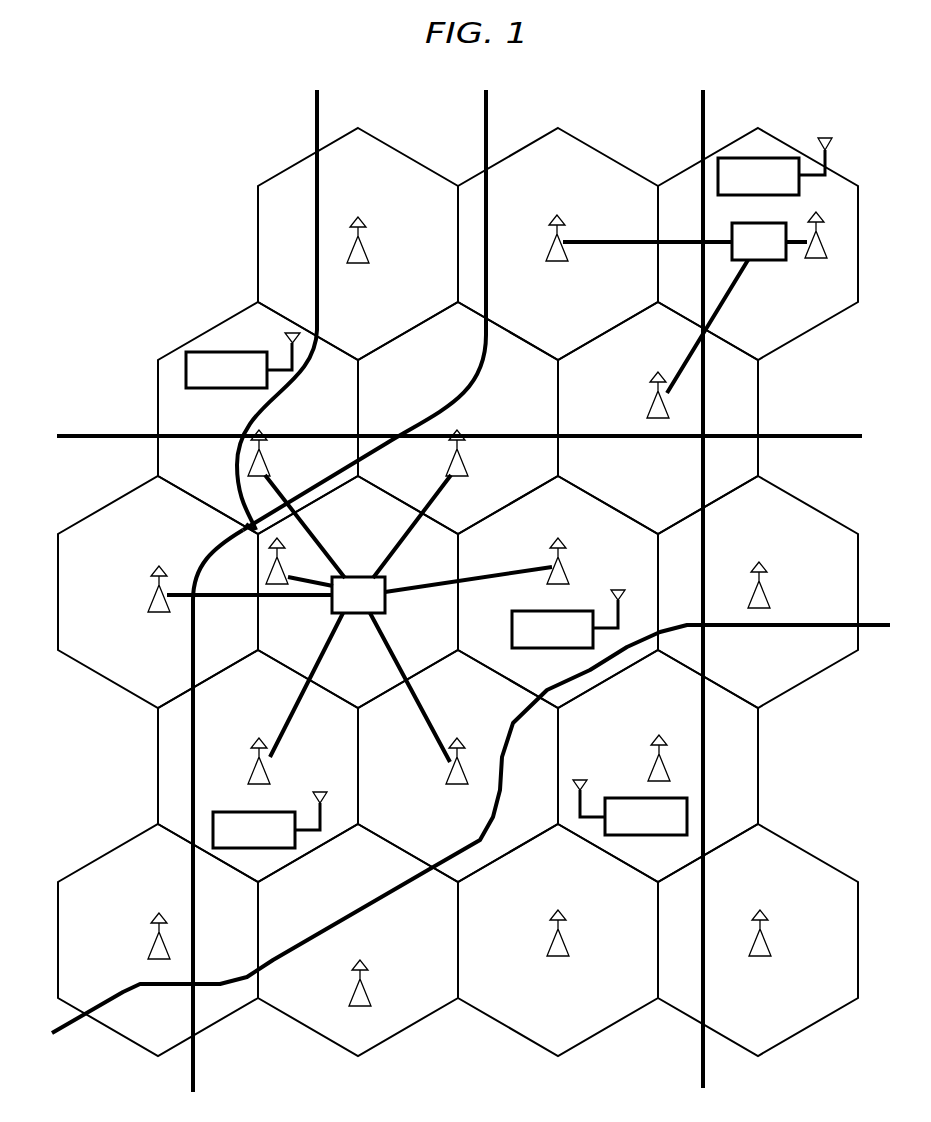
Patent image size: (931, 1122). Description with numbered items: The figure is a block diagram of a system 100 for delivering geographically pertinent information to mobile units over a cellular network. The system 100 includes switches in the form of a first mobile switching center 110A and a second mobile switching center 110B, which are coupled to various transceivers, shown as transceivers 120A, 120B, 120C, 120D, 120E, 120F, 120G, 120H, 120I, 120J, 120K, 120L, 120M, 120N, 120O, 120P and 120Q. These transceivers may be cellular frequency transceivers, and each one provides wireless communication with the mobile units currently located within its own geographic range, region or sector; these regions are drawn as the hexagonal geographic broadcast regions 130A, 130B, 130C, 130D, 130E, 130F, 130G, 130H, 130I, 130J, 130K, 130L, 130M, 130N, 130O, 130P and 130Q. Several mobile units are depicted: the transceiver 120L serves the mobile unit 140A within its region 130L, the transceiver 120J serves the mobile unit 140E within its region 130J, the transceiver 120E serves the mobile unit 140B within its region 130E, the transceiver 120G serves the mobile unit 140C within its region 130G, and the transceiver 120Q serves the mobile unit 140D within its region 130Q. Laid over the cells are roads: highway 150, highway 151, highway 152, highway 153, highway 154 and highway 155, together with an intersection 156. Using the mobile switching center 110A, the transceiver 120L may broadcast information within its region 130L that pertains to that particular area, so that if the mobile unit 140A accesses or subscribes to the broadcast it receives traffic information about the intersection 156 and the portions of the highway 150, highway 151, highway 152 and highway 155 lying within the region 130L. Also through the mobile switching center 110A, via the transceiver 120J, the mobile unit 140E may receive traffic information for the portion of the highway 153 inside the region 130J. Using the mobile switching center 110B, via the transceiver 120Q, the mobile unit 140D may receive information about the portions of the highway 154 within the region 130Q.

The system 100 is at (478, 1075).
The mobile switching center 110A is at (353, 615).
The mobile switching center 110B is at (732, 233).
The transceiver 120A is at (150, 948).
The transceiver 120B is at (368, 993).
The transceiver 120C is at (567, 947).
The transceiver 120D is at (769, 947).
The transceiver 120E is at (270, 773).
The transceiver 120F is at (448, 773).
The transceiver 120G is at (667, 770).
The transceiver 120H is at (159, 613).
The transceiver 120I is at (270, 565).
The transceiver 120J is at (567, 570).
The transceiver 120K is at (770, 593).
The transceiver 120L is at (267, 467).
The transceiver 120M is at (467, 467).
The transceiver 120N is at (648, 405).
The transceiver 120O is at (368, 252).
The transceiver 120P is at (550, 250).
The transceiver 120Q is at (816, 260).
The geographic broadcast region 130A is at (180, 874).
The geographic broadcast region 130B is at (380, 874).
The geographic broadcast region 130C is at (578, 873).
The geographic broadcast region 130D is at (782, 871).
The geographic broadcast region 130E is at (282, 701).
The geographic broadcast region 130F is at (480, 698).
The geographic broadcast region 130G is at (680, 698).
The geographic broadcast region 130H is at (182, 528).
The geographic broadcast region 130I is at (380, 524).
The geographic broadcast region 130J is at (580, 524).
The geographic broadcast region 130K is at (780, 524).
The geographic broadcast region 130L is at (345, 423).
The geographic broadcast region 130M is at (480, 349).
The geographic broadcast region 130N is at (680, 346).
The geographic broadcast region 130O is at (378, 175).
The geographic broadcast region 130P is at (578, 175).
The geographic broadcast region 130Q is at (780, 338).
The mobile unit 140A is at (188, 360).
The mobile unit 140B is at (233, 813).
The mobile unit 140C is at (623, 798).
The mobile unit 140D is at (783, 158).
The mobile unit 140E is at (512, 627).
The highway 150 is at (317, 128).
The highway 151 is at (486, 128).
The highway 152 is at (192, 790).
The highway 153 is at (875, 623).
The highway 154 is at (702, 124).
The highway 155 is at (118, 436).
The intersection 156 is at (240, 522).